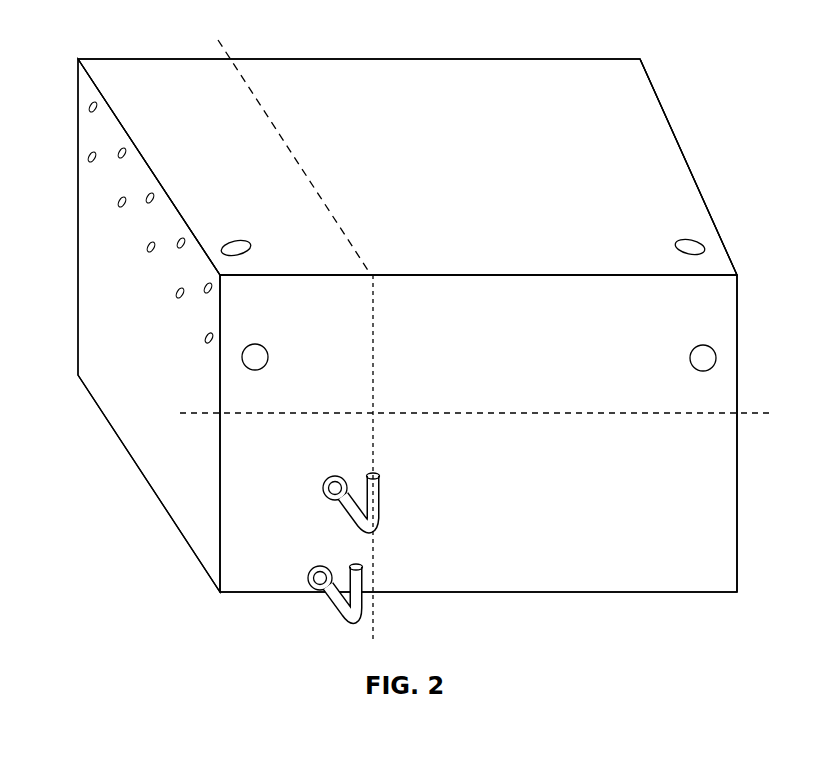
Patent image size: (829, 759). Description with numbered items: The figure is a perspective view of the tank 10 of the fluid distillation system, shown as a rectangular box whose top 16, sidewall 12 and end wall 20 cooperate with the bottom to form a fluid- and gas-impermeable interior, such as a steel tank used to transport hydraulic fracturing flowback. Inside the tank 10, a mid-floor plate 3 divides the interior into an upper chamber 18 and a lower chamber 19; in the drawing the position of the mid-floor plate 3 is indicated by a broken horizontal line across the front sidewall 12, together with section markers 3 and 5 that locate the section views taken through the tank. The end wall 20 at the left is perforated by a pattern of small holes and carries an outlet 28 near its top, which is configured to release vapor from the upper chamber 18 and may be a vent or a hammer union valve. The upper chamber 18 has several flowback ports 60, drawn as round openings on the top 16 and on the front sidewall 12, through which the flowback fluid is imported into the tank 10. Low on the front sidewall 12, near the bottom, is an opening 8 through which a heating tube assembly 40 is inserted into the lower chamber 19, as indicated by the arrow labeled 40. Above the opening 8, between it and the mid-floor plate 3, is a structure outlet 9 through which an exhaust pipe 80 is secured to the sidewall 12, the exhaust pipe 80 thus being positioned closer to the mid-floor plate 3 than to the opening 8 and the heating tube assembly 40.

The tank 10 is at (620, 34).
The top 16 is at (400, 70).
The end wall 20 is at (93, 292).
The outlet 28 is at (204, 338).
The sidewall 12 is at (713, 301).
The upper chamber 18 is at (713, 338).
The lower chamber 19 is at (722, 510).
The flowback port 60 is at (250, 245).
The structure outlet 9 is at (334, 478).
The opening 8 is at (318, 566).
The exhaust pipe 80 is at (382, 508).
The heating tube assembly 40 is at (324, 607).
The mid-floor plate 3 is at (218, 33).
The section line 5 is at (180, 413).